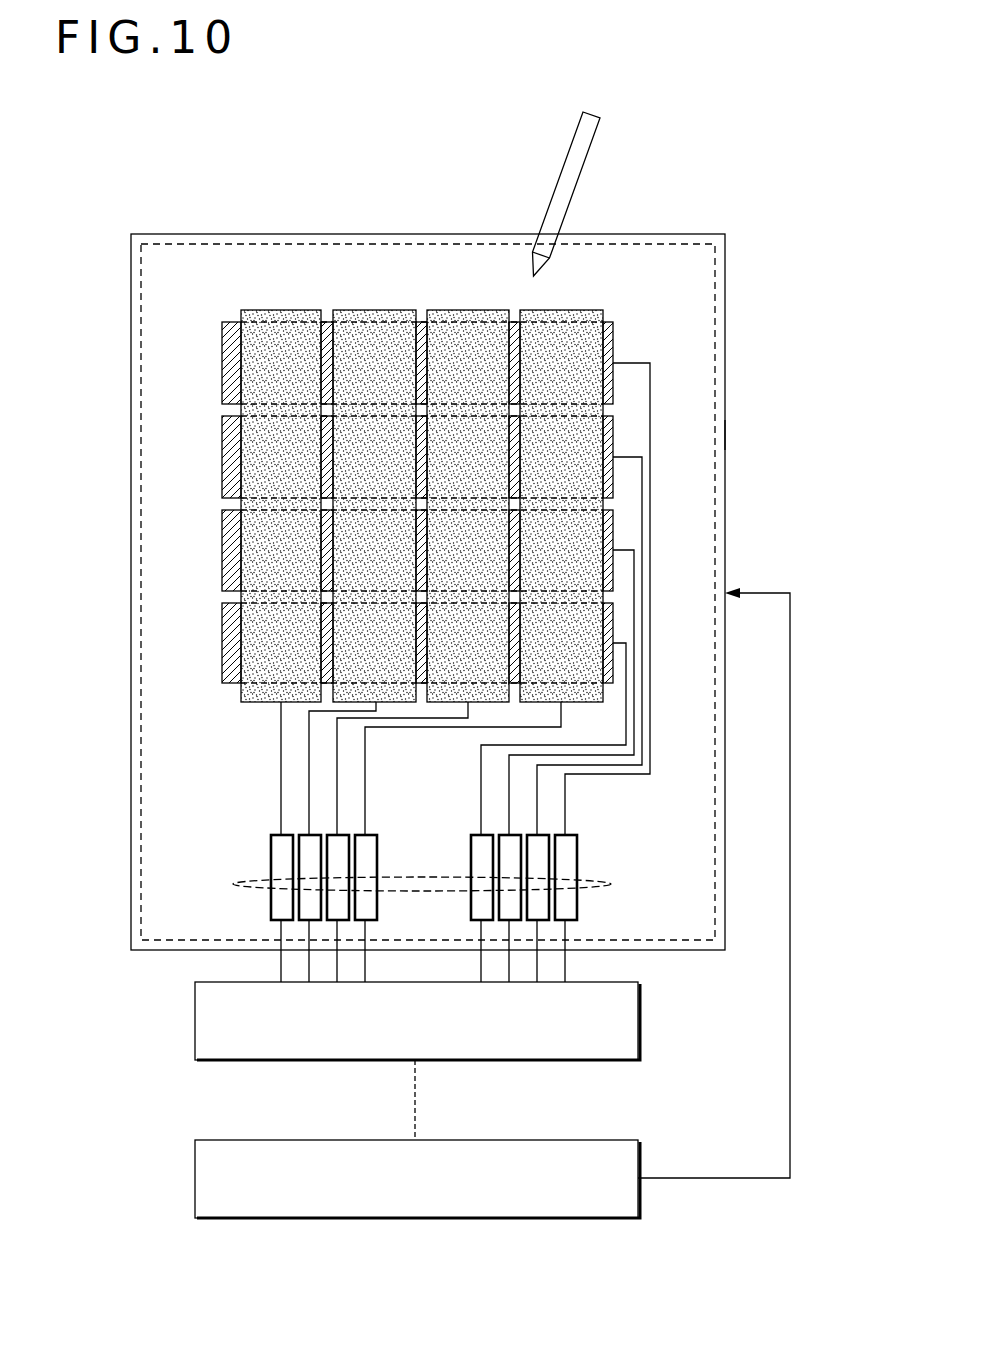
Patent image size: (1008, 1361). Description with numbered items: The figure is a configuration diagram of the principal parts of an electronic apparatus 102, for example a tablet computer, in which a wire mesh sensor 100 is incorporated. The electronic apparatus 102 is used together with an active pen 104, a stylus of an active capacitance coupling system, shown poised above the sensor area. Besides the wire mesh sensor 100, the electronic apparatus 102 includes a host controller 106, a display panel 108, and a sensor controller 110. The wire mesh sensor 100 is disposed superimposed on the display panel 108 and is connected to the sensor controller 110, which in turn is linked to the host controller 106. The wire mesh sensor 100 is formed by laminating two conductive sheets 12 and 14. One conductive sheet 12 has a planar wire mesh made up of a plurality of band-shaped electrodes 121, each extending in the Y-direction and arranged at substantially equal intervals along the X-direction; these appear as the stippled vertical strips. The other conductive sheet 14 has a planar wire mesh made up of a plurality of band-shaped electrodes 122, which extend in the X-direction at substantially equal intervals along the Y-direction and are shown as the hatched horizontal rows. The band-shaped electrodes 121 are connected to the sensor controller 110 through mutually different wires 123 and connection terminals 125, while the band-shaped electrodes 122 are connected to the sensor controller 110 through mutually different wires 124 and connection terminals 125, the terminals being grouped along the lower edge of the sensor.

The conductive sheet 12 is at (715, 368).
The conductive sheet 14 is at (760, 433).
The wire mesh sensor 100 is at (500, 592).
The electronic apparatus 102 is at (188, 196).
The active pen 104 is at (563, 185).
The host controller 106 is at (195, 1178).
The display panel 108 is at (725, 308).
The sensor controller 110 is at (195, 1028).
The band-shaped electrodes 121 is at (276, 315).
The band-shaped electrodes 122 is at (230, 370).
The wires 123 is at (273, 705).
The wires 124 is at (463, 752).
The connection terminals 125 is at (238, 878).